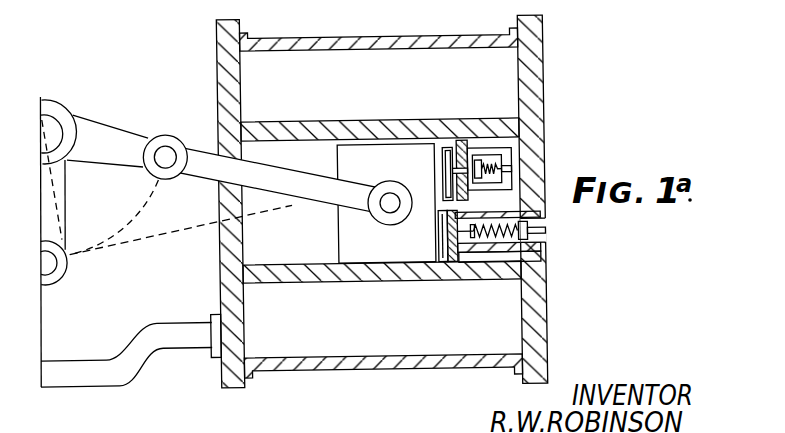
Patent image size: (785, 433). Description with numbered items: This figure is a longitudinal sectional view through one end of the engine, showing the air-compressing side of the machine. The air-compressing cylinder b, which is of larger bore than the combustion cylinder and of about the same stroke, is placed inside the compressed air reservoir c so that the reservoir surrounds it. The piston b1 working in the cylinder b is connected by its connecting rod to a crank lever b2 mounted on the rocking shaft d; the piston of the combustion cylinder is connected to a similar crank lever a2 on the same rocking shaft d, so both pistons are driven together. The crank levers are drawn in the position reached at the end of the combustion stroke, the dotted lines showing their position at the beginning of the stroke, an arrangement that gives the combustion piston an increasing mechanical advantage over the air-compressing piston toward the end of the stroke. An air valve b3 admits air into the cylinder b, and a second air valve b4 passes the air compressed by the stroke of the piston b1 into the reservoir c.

The compressed air reservoir c is at (381, 201).
The air-compressing cylinder b is at (381, 200).
The piston of the air-compressing cylinder b1 is at (373, 187).
The crank lever b2 is at (239, 170).
The air valve b3 is at (449, 229).
The air valve b4 is at (447, 172).
The crank lever a2 is at (162, 240).
The rocking shaft d is at (43, 117).